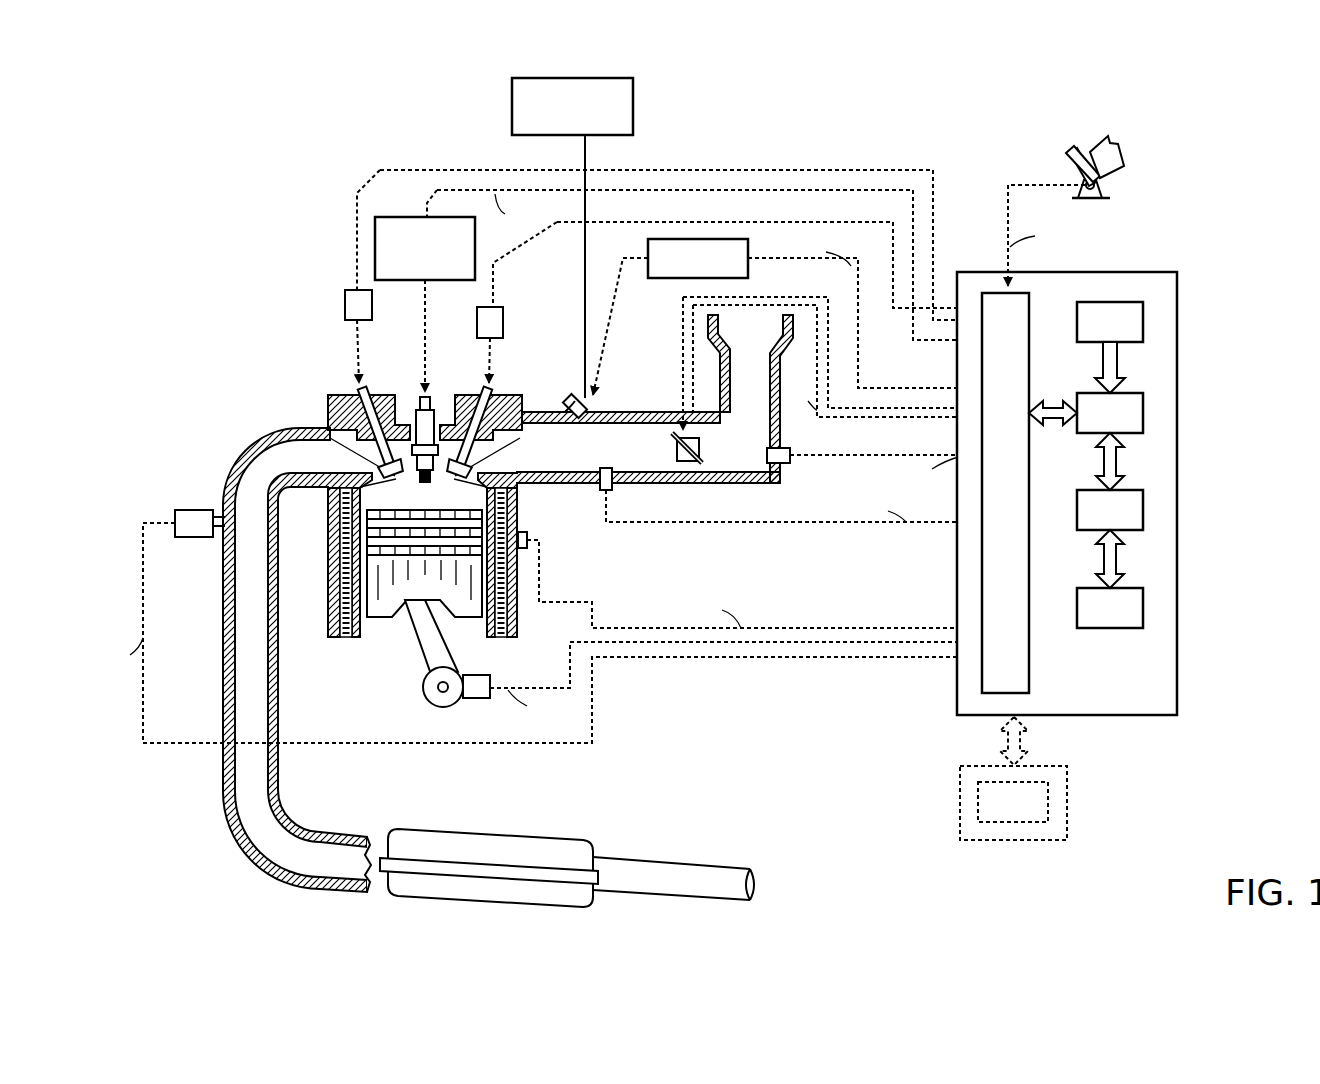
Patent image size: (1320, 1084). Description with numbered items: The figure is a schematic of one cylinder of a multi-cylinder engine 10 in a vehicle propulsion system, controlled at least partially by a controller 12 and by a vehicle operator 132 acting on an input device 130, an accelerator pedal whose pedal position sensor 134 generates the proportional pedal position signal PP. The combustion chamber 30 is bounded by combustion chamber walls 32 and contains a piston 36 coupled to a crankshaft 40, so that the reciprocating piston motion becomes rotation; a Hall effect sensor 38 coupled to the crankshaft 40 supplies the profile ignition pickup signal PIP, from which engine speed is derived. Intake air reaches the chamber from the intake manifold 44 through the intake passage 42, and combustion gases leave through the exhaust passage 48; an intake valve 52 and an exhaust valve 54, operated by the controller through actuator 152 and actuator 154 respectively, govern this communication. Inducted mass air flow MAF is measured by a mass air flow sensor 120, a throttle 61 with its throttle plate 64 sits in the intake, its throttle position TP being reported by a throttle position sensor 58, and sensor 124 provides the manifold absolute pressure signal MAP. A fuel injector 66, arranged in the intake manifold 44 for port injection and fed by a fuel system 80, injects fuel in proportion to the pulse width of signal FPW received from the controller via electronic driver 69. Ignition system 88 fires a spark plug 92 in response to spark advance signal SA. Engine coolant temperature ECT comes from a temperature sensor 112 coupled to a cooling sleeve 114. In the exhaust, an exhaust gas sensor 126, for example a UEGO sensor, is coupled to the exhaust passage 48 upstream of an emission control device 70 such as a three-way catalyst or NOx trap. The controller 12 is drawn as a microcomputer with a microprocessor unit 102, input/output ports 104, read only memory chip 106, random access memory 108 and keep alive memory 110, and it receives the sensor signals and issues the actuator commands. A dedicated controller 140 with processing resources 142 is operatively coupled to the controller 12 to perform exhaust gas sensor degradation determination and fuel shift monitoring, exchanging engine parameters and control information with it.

The engine 10 is at (262, 350).
The controller 12 is at (1114, 477).
The combustion chamber 30 is at (423, 492).
The combustion chamber walls 32 is at (358, 642).
The piston 36 is at (407, 590).
The Hall effect sensor 38 is at (470, 700).
The crankshaft 40 is at (432, 705).
The intake passage 42 is at (762, 373).
The intake manifold 44 is at (595, 455).
The exhaust passage 48 is at (310, 466).
The intake valve 52 is at (443, 438).
The exhaust valve 54 is at (332, 436).
The throttle position sensor 58 is at (704, 437).
The throttle body 61 is at (696, 468).
The throttle plate 64 is at (677, 452).
The fuel injector 66 is at (570, 397).
The electronic driver 69 is at (747, 268).
The emission control device 70 is at (541, 833).
The fuel system 80 is at (624, 131).
The ignition system 88 is at (393, 218).
The spark plug 92 is at (430, 393).
The microprocessor unit 102 is at (1146, 412).
The input/output ports 104 is at (1033, 302).
The read only memory chip 106 is at (1146, 318).
The random access memory 108 is at (1146, 510).
The keep alive memory 110 is at (1146, 608).
The temperature sensor 112 is at (532, 540).
The cooling sleeve 114 is at (520, 607).
The mass air flow sensor 120 is at (790, 466).
The manifold absolute pressure sensor 124 is at (598, 491).
The exhaust gas sensor 126 is at (168, 515).
The input device 130 is at (1072, 162).
The vehicle operator 132 is at (1116, 152).
The pedal position sensor 134 is at (1108, 187).
The dedicated controller 140 is at (1067, 781).
The processing resources 142 is at (1048, 812).
The actuator 152 is at (477, 321).
The actuator 154 is at (345, 308).